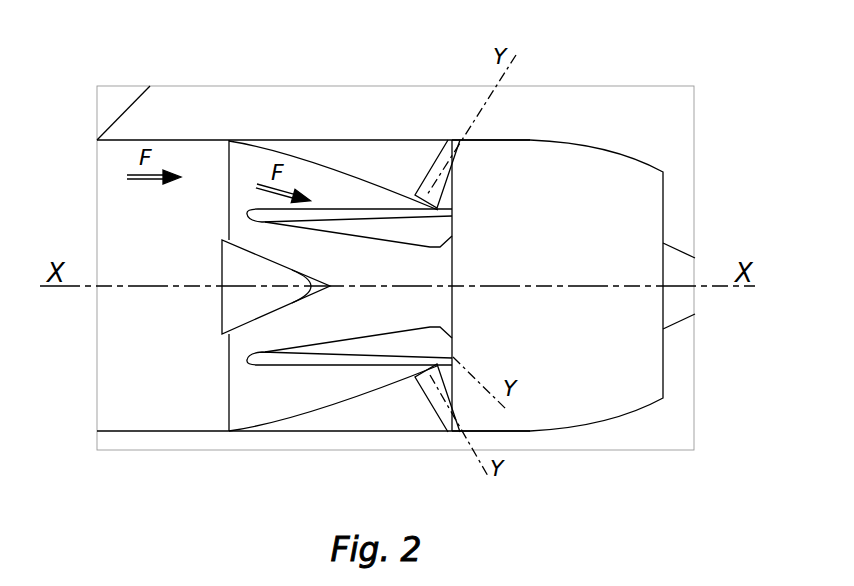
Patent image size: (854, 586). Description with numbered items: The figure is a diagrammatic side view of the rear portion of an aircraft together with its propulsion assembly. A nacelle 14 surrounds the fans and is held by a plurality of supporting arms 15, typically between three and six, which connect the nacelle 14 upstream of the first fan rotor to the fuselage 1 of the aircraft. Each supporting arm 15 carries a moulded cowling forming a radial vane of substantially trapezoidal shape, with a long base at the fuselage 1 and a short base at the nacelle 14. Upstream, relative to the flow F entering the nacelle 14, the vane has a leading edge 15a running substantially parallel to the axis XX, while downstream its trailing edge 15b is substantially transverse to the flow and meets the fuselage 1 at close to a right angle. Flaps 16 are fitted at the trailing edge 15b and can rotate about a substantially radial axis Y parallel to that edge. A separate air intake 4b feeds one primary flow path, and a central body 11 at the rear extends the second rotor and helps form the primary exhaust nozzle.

The aircraft fuselage 1 is at (147, 405).
The air intake 4b is at (237, 312).
The central body 11 is at (678, 265).
The nacelle 14 is at (612, 182).
The supporting arm 15 is at (387, 207).
The leading edge 15a is at (347, 221).
The trailing edge 15b is at (453, 242).
The flap 16 is at (453, 176).